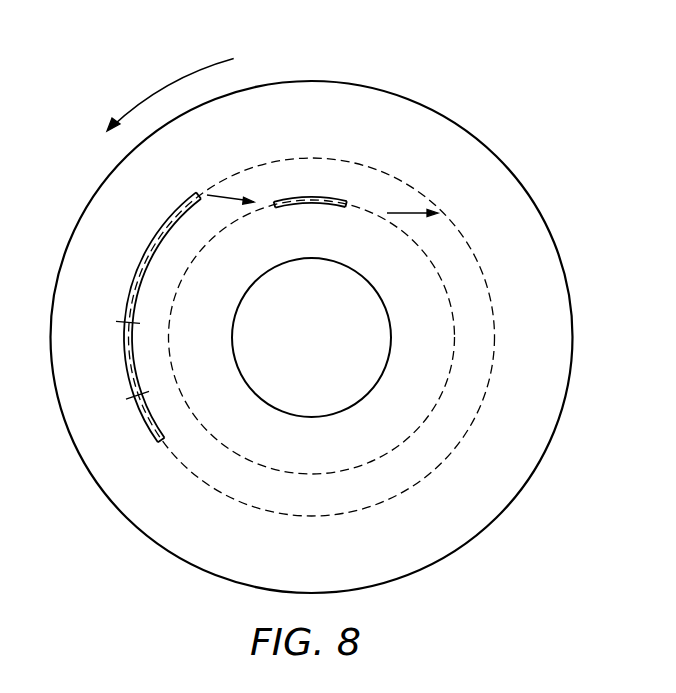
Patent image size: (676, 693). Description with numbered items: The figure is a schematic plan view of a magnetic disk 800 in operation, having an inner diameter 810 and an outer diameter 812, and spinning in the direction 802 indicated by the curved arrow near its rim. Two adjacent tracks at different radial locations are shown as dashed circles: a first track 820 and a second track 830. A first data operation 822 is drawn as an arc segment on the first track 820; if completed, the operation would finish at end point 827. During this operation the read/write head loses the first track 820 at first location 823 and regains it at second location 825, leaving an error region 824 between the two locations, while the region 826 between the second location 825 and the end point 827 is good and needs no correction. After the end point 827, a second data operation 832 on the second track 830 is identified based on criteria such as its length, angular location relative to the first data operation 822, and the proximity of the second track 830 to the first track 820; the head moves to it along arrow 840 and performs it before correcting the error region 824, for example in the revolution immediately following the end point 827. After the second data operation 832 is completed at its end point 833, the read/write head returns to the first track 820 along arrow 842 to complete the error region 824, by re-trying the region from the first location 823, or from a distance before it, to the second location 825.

The disk 800 is at (480, 60).
The direction 802 is at (174, 82).
The inner diameter 810 is at (373, 384).
The outer diameter 812 is at (474, 136).
The first track 820 is at (480, 400).
The first data operation 822 is at (148, 428).
The first location 823 is at (136, 404).
The error region 824 is at (124, 346).
The second location 825 is at (120, 322).
The region 826 is at (132, 326).
The end point 827 is at (197, 193).
The second track 830 is at (430, 416).
The second data operation 832 is at (352, 162).
The end point 833 is at (347, 203).
The track transition 840 is at (233, 194).
The arrow 842 is at (414, 211).